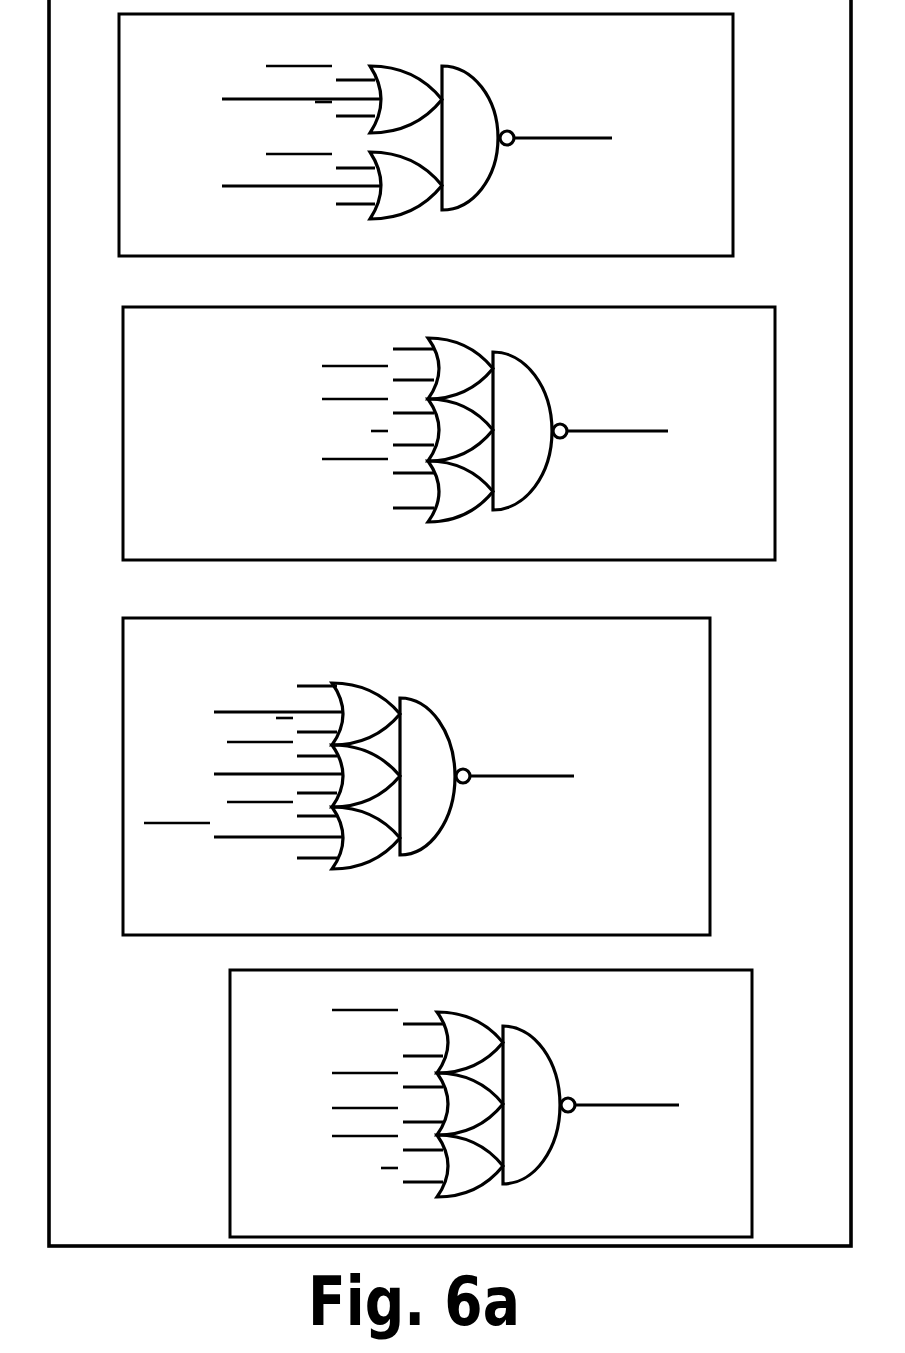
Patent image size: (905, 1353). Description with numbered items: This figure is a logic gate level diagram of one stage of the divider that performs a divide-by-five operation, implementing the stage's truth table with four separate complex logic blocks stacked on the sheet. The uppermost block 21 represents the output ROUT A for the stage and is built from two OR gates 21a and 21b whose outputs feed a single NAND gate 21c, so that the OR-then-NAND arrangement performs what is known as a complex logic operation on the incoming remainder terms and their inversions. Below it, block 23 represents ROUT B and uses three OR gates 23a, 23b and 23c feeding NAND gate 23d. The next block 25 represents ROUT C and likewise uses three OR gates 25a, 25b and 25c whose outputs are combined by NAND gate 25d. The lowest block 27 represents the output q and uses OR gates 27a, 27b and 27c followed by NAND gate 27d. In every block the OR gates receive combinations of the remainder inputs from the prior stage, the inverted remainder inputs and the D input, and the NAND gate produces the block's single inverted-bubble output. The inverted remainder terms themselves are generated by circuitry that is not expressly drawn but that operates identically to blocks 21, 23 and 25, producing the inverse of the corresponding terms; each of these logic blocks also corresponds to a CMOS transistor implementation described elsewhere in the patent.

The block representing ROUT A 21 is at (733, 225).
The OR gate 21a is at (405, 67).
The OR gate 21b is at (403, 217).
The NAND gate 21c is at (483, 185).
The block representing ROUT B 23 is at (745, 562).
The OR gate 23a is at (466, 346).
The OR gate 23b is at (443, 430).
The OR gate 23c is at (463, 516).
The NAND gate 23d is at (528, 474).
The block representing ROUT C 25 is at (712, 866).
The OR gate 25a is at (382, 684).
The OR gate 25b is at (307, 776).
The OR gate 25c is at (363, 870).
The NAND gate 25d is at (442, 835).
The block representing q 27 is at (232, 1066).
The OR gate 27a is at (487, 1018).
The OR gate 27b is at (453, 1104).
The OR gate 27c is at (480, 1188).
The NAND gate 27d is at (543, 1151).